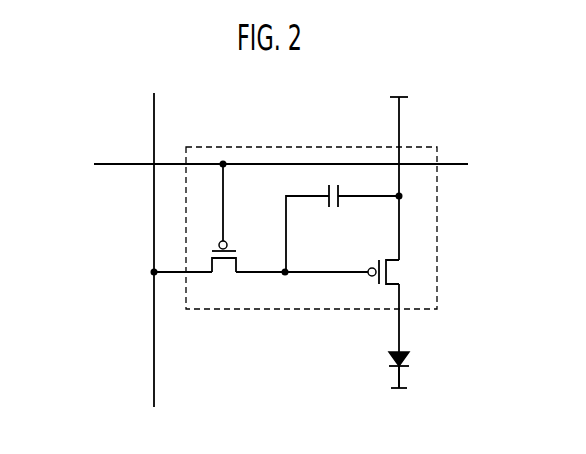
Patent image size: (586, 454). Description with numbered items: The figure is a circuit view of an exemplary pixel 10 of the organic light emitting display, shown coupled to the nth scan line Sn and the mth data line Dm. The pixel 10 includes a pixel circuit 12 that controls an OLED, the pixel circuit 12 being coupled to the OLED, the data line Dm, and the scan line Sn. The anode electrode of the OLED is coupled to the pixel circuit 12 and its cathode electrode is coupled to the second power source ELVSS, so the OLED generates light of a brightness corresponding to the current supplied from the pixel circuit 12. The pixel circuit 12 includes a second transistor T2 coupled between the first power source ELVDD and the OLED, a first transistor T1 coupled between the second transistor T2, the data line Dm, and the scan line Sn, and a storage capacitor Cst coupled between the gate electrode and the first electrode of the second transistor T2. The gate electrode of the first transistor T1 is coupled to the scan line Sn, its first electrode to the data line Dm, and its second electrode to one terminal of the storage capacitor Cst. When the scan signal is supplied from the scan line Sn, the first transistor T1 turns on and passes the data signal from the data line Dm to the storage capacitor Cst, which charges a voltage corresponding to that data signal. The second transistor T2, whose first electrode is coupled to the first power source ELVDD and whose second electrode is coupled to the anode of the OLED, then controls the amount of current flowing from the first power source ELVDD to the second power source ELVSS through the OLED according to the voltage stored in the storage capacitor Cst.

The pixel 10 is at (71, 68).
The pixel circuit 12 is at (439, 205).
The data line Dm is at (156, 100).
The scan line Sn is at (108, 166).
The first power source ELVDD is at (399, 165).
The second power source ELVSS is at (398, 391).
The element OLED is at (378, 359).
The first transistor T1 is at (224, 229).
The second transistor T2 is at (391, 272).
The storage capacitor Cst is at (342, 228).